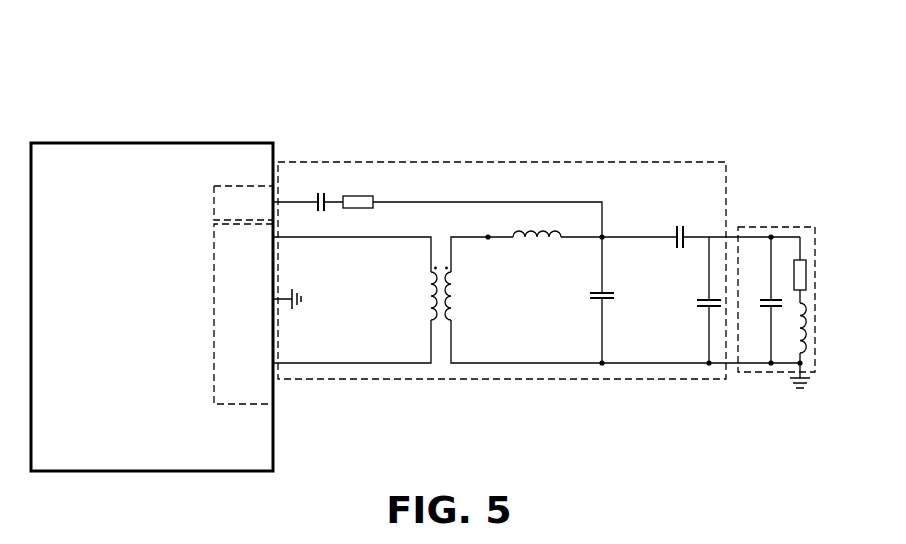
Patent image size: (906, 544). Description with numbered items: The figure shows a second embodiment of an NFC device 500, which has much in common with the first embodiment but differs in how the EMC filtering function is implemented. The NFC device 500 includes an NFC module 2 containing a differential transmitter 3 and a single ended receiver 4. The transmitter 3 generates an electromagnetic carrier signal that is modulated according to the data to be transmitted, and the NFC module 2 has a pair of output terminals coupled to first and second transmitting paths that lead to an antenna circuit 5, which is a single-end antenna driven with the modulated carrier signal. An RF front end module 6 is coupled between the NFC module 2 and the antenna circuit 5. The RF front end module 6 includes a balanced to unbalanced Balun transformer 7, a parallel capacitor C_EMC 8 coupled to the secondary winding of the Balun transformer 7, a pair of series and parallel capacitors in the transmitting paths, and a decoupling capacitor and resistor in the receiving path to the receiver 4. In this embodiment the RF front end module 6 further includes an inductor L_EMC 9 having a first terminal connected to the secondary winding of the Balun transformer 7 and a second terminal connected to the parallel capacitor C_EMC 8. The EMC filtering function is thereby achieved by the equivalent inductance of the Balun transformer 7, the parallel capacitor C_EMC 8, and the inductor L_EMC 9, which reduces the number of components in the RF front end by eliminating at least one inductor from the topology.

The NFC device 500 is at (486, 100).
The NFC module 2 is at (135, 140).
The differential transmitter 3 is at (212, 311).
The single ended receiver 4 is at (216, 186).
The antenna circuit 5 is at (773, 223).
The RF front end module 6 is at (603, 160).
The Balun transformer 7 is at (437, 262).
The parallel capacitor C_EMC 8 is at (621, 290).
The inductor L_EMC 9 is at (541, 224).